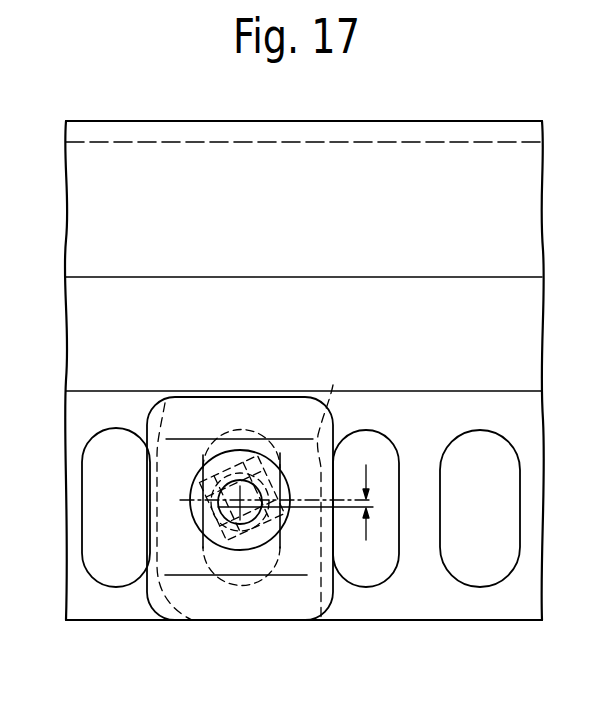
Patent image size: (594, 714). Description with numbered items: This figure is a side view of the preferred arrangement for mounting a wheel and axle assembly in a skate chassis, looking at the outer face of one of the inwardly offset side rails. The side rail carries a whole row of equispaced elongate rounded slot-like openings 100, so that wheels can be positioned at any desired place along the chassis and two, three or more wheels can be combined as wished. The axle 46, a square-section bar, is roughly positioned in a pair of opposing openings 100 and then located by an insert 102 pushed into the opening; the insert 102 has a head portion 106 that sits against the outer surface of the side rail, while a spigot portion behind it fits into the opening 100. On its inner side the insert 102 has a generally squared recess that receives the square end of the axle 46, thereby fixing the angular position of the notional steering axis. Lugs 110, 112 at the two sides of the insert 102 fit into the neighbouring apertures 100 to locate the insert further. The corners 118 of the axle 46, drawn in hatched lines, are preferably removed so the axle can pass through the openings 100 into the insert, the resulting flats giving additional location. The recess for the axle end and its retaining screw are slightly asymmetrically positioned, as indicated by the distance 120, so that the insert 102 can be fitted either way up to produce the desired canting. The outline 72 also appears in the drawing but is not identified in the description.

The axle 46 is at (190, 620).
The guide slot 72 is at (242, 430).
The elongate rounded slot-like opening 100 is at (478, 572).
The insert 102 is at (265, 595).
The head portion 106 is at (230, 598).
The lug 110 is at (165, 403).
The lug 112 is at (333, 385).
The corners of the axle 118 is at (193, 481).
The distance 120 is at (373, 506).